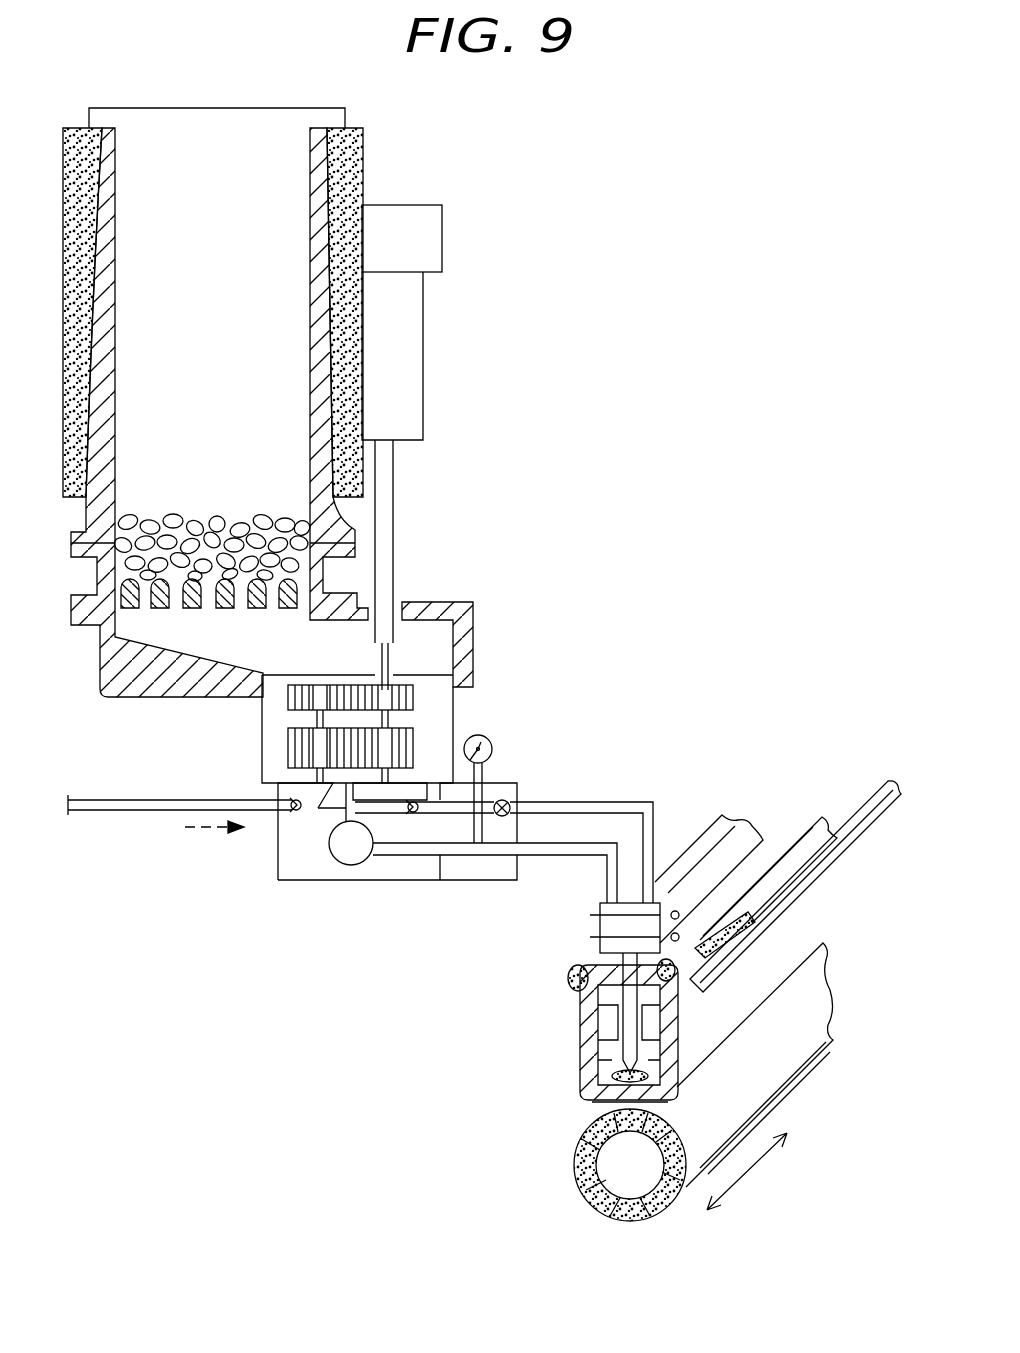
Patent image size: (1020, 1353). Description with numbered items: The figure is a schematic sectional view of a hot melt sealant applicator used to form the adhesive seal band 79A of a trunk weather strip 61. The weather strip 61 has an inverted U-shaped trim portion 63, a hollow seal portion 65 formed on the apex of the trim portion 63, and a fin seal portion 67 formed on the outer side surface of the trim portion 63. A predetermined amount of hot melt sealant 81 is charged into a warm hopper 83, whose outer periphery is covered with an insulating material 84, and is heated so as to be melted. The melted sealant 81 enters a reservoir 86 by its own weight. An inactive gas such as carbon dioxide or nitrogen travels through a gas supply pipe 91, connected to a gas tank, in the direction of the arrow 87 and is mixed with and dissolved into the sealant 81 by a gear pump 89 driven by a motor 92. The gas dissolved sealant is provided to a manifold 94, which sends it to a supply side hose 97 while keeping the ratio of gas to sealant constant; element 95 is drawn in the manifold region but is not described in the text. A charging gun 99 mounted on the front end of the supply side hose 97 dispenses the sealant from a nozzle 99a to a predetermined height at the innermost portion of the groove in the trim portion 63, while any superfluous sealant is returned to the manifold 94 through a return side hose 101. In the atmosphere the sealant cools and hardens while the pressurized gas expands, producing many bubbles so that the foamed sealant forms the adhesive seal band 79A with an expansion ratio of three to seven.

The weather strip 61 is at (832, 1001).
The trim portion 63 is at (585, 1074).
The hollow seal portion 65 is at (770, 1085).
The fin seal portion 67 is at (858, 822).
The adhesive seal band 79A is at (598, 1107).
The hot melt sealant 81 is at (140, 515).
The warm hopper 83 is at (106, 375).
The insulating material 84 is at (82, 289).
The reservoir 86 is at (262, 748).
The arrow 87 is at (207, 832).
The gear pump 89 is at (413, 700).
The gas supply pipe 91 is at (122, 815).
The motor 92 is at (412, 362).
The manifold 94 is at (278, 872).
The pump 95 is at (350, 855).
The supply side hose 97 is at (446, 858).
The charging gun 99 is at (610, 926).
The nozzle 99a is at (626, 1030).
The return side hose 101 is at (627, 806).